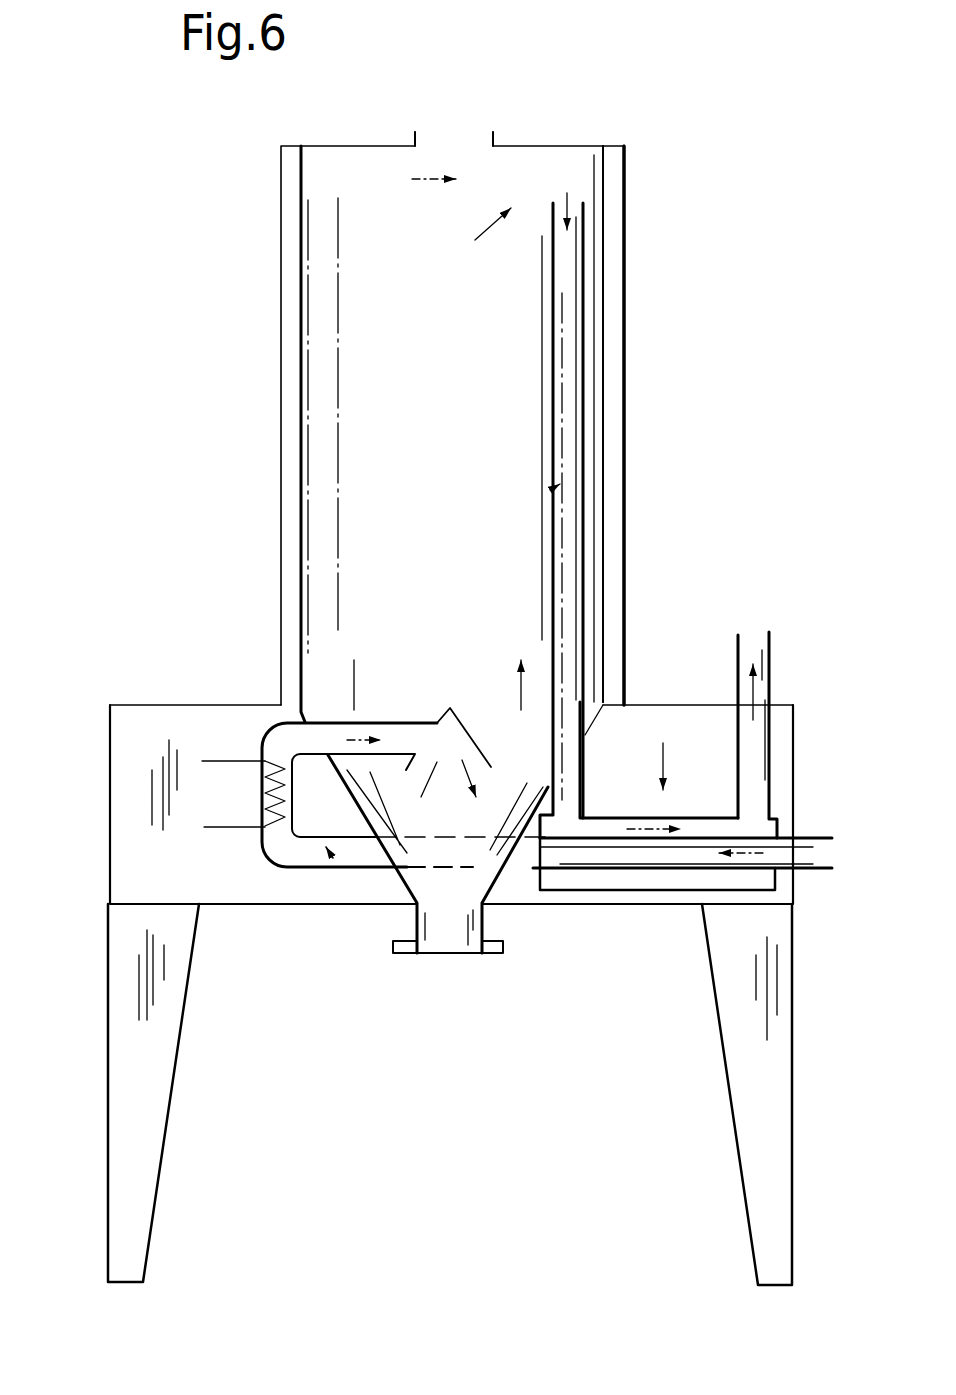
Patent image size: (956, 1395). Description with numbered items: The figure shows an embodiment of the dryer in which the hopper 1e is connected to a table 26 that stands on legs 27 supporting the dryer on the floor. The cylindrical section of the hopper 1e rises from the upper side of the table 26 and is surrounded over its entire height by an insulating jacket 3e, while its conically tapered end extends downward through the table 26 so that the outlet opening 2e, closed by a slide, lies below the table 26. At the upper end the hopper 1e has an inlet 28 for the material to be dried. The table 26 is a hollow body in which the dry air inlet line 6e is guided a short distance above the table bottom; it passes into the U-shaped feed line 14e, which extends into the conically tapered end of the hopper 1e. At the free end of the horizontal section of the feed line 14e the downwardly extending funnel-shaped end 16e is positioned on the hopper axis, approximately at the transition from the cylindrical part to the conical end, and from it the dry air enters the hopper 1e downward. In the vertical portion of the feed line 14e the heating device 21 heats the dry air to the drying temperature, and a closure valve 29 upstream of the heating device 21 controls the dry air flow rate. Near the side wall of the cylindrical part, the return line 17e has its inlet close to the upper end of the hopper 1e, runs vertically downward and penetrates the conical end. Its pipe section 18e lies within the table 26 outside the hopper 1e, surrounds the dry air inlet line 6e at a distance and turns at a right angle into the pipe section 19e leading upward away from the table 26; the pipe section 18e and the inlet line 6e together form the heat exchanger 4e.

The hopper 1e is at (288, 227).
The inlet 28 is at (462, 142).
The insulating jacket 3e is at (610, 372).
The return line 17e is at (583, 470).
The table 26 is at (150, 738).
The legs 27 is at (139, 1085).
The feed line 14e is at (287, 857).
The heating device 21 is at (223, 827).
The closure valve 29 is at (337, 860).
The funnel-shaped end 16e is at (483, 752).
The outlet opening 2e is at (467, 955).
The heat exchanger 4e is at (659, 765).
The pipe section 19e is at (753, 760).
The dry air inlet line 6e is at (813, 857).
The pipe section 18e is at (605, 877).